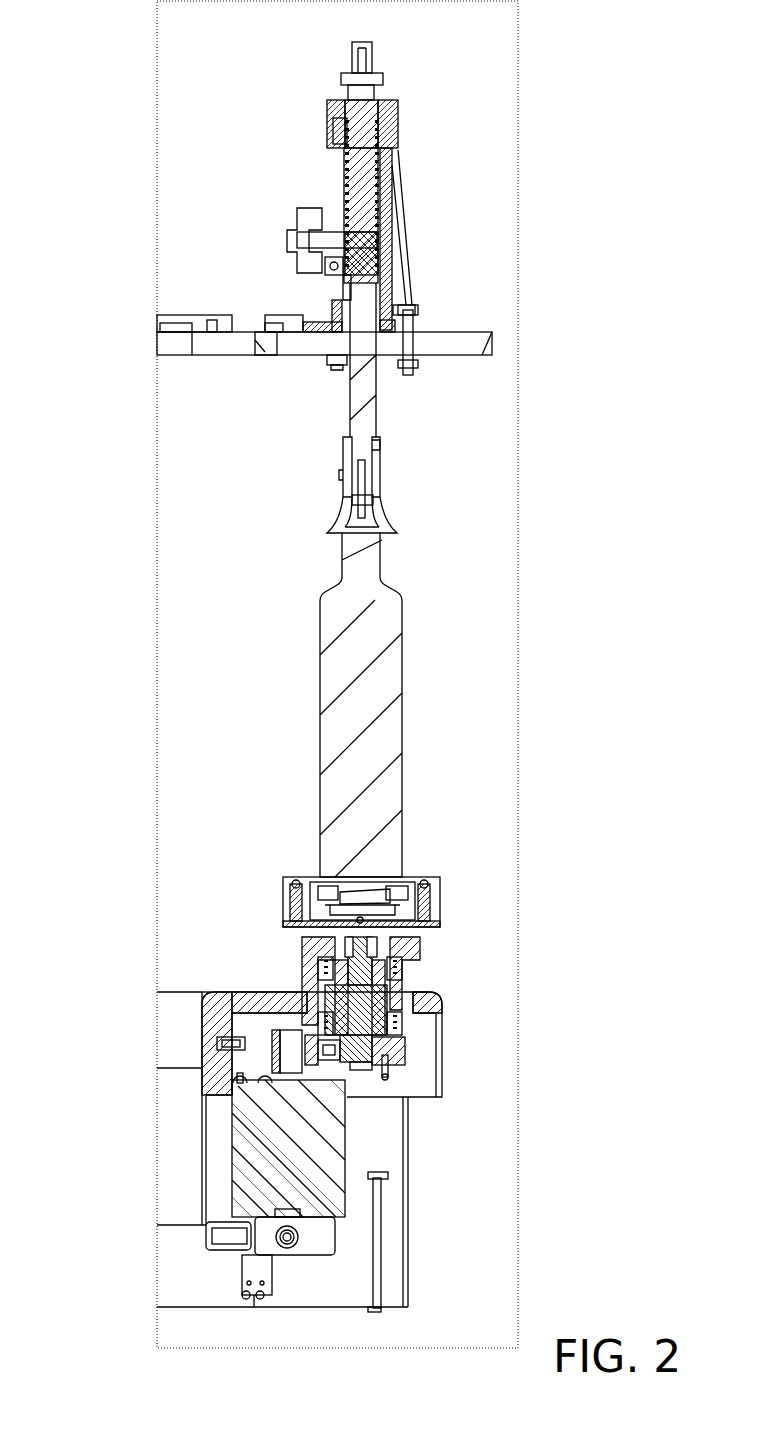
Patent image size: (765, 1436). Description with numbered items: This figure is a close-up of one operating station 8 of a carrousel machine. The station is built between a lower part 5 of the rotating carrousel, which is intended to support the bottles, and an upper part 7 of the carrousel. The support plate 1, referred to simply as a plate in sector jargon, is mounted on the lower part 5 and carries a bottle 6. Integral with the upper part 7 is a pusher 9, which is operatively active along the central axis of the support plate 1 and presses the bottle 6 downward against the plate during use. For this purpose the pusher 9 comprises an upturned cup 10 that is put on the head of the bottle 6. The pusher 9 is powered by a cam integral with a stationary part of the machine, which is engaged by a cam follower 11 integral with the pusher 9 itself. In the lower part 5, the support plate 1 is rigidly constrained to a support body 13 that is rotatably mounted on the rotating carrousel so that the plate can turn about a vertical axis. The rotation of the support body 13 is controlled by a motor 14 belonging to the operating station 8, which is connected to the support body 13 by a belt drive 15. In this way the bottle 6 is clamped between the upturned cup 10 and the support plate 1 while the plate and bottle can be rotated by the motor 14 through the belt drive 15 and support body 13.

The support plate 1 is at (451, 883).
The lower part 5 is at (487, 1085).
The bottle 6 is at (378, 657).
The upper part 7 is at (487, 265).
The operating station 8 is at (207, 742).
The pusher 9 is at (412, 220).
The upturned cup 10 is at (380, 516).
The cam follower 11 is at (317, 218).
The support body 13 is at (383, 1008).
The motor 14 is at (263, 1139).
The belt drive 15 is at (252, 1051).